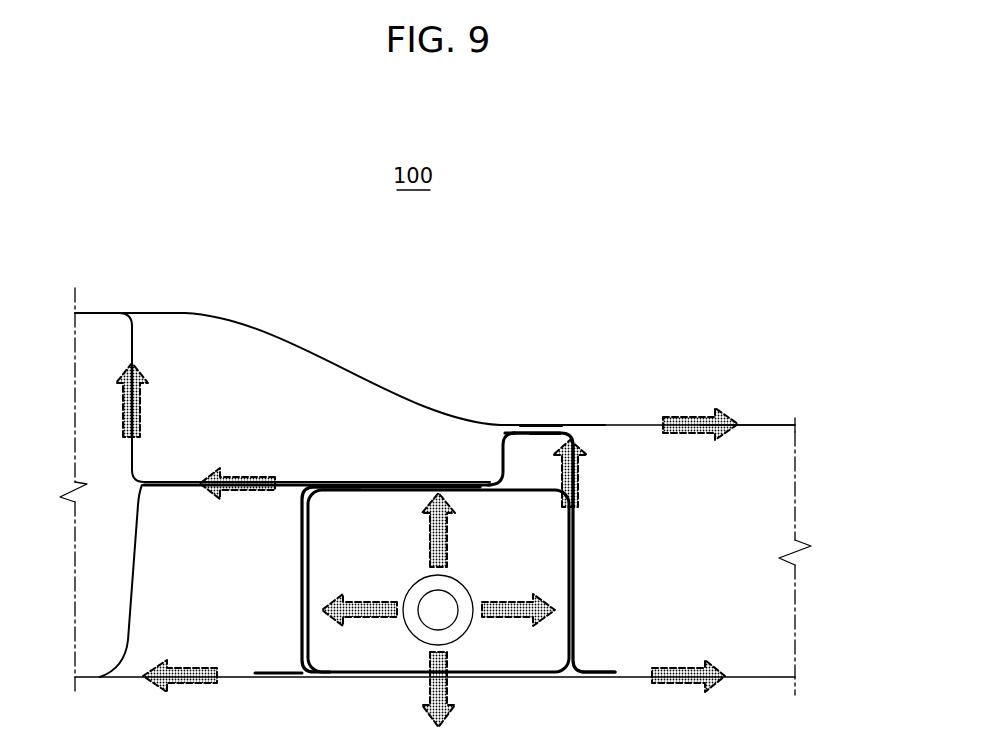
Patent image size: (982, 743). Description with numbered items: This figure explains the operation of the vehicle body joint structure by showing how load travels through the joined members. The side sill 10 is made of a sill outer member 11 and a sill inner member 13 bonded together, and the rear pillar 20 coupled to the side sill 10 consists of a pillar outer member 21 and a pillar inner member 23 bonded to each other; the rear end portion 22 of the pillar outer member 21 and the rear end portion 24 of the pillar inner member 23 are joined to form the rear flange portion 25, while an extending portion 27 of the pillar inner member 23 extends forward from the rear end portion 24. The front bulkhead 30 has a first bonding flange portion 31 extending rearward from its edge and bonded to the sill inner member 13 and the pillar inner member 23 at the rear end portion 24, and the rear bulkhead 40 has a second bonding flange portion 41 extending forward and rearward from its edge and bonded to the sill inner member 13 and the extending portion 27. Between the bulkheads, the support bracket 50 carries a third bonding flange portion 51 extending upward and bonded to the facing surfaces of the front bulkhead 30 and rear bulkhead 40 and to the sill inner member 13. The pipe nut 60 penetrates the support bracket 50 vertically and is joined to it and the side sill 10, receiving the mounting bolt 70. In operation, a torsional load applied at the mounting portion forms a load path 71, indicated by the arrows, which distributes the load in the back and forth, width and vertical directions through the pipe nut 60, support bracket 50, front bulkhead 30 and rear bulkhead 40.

The side sill 10 is at (771, 410).
The sill outer member 11 is at (750, 425).
The sill inner member 13 is at (638, 678).
The rear pillar 20 is at (418, 296).
The pillar outer member 21 is at (391, 369).
The rear end portion of the pillar outer member 22 is at (578, 424).
The pillar inner member 23 is at (418, 470).
The rear end portion of the pillar inner member 24 is at (553, 427).
The rear flange portion 25 is at (540, 413).
The extending portion 27 is at (350, 484).
The front bulkhead 30 is at (590, 538).
The first bonding flange portion 31 is at (512, 430).
The rear bulkhead 40 is at (290, 578).
The second bonding flange portion 41 is at (337, 486).
The support bracket 50 is at (476, 507).
The third bonding flange portion 51 is at (550, 440).
The pipe nut 60 is at (456, 634).
The mounting bolt 70 is at (432, 612).
The load path 71 is at (142, 407).